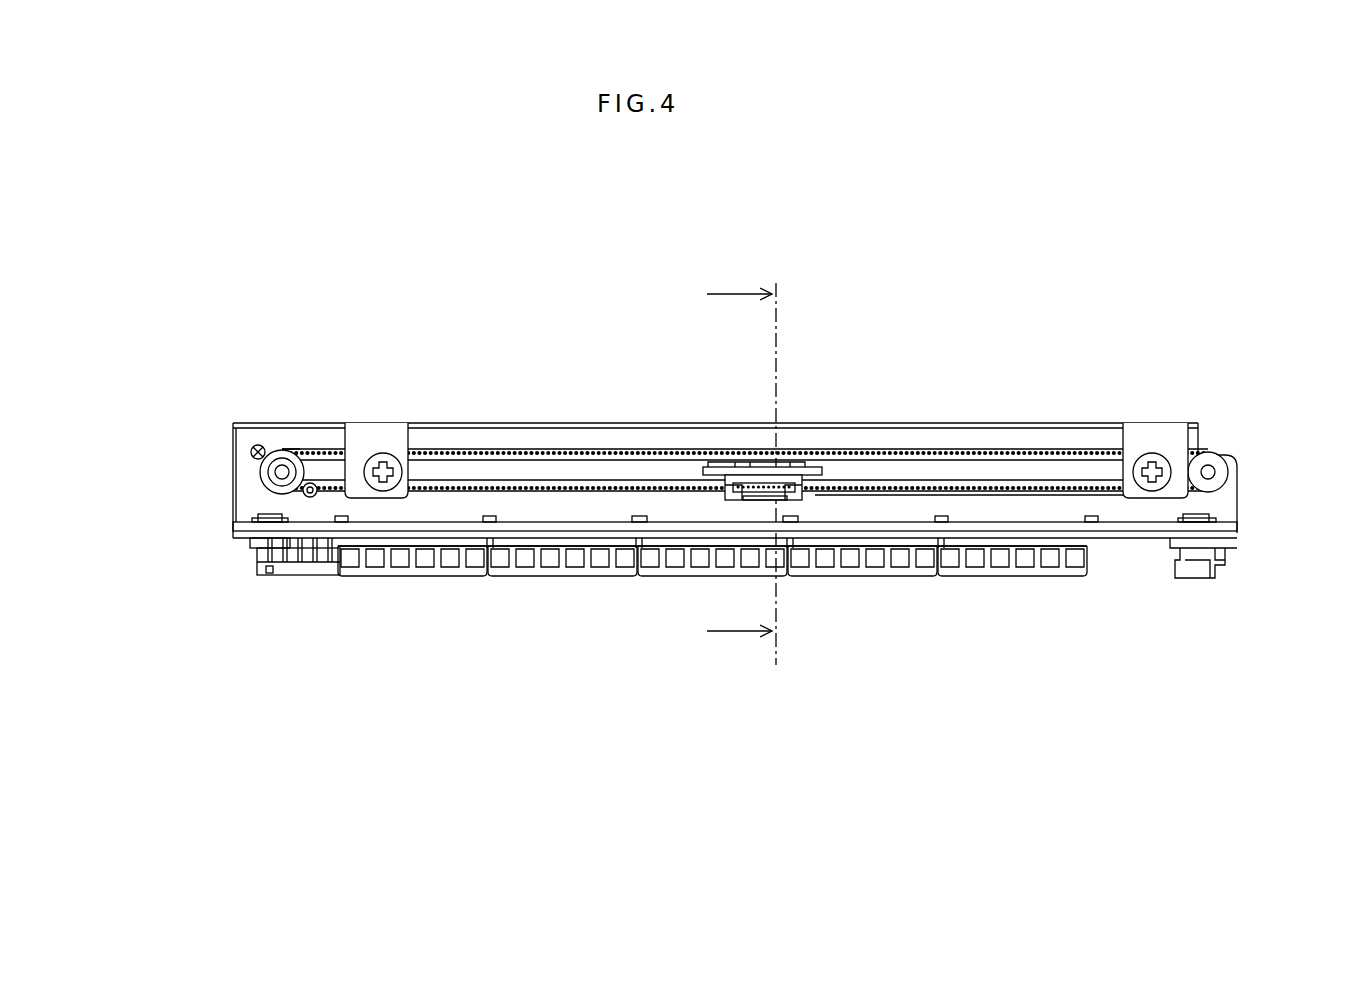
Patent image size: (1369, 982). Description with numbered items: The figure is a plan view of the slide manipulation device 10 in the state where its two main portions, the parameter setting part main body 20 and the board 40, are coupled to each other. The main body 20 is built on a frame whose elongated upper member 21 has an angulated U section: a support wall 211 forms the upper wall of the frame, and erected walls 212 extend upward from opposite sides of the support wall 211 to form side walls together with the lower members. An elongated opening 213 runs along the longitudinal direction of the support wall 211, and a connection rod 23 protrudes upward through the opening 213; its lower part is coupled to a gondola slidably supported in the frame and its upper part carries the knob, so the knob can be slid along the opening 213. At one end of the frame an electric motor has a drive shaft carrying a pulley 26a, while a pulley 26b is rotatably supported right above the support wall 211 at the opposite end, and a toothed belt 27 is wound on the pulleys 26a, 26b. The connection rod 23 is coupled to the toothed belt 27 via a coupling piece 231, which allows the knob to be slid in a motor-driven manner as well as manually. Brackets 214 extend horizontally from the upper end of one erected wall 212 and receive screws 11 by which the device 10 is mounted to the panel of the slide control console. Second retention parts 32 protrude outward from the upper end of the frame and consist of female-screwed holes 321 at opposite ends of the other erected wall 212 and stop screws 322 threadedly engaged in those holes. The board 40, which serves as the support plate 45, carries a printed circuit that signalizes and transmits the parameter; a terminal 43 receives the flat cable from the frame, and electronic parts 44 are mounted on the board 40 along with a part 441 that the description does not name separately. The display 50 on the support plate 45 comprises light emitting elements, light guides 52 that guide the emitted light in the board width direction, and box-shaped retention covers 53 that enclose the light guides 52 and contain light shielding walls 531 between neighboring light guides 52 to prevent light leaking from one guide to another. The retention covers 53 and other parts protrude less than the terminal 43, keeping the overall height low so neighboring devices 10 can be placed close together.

The slide manipulation device 10 is at (1175, 348).
The parameter setting part main body 20 is at (1110, 395).
The upper member 21 is at (135, 370).
The support wall 211 is at (233, 455).
The erected walls 212 is at (253, 420).
The opening 213 is at (908, 472).
The brackets 214 is at (365, 440).
The screws 11 is at (386, 453).
The connection rod 23 is at (758, 467).
The coupling piece 231 is at (725, 497).
The pulley 26a is at (282, 450).
The pulley 26b is at (1217, 455).
The toothed belt 27 is at (532, 448).
The second retention parts 32 is at (142, 533).
The female-screwed holes 321 is at (233, 538).
The stop screws 322 is at (243, 548).
The board 40 is at (1148, 588).
The terminal 43 is at (1195, 578).
The electronic parts 44 is at (1042, 583).
The contact cavity 441 is at (1000, 568).
The support plate 45 is at (1120, 545).
The display 50 is at (342, 583).
The light guides 52 is at (397, 568).
The retention covers 53 is at (475, 578).
The light shielding walls 531 is at (460, 568).